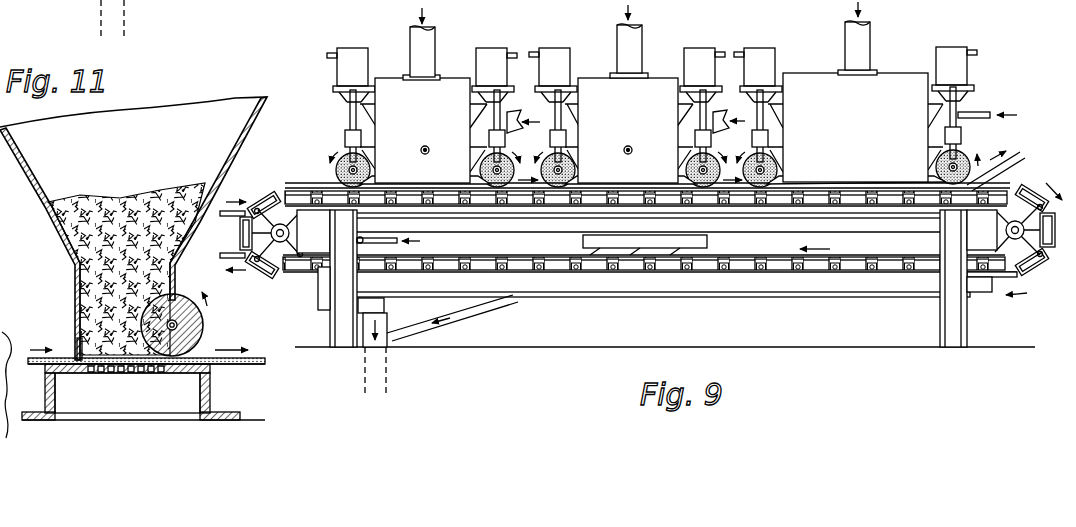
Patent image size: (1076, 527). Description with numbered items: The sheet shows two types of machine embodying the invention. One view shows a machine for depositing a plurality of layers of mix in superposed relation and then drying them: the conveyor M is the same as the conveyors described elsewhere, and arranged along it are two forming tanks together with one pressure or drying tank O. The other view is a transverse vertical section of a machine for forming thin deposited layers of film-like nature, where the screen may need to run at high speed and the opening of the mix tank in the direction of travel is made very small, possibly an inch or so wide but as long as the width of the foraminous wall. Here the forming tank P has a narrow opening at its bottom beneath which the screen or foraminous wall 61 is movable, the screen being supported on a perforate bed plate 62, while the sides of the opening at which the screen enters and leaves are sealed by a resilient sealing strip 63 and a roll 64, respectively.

In FIG. 11, the forming tank P is at (177, 125).
In FIG. 11, the screen or foraminous wall 61 is at (262, 365).
In FIG. 11, the perforate bed plate 62 is at (192, 376).
In FIG. 11, the resilient sealing strip 63 is at (77, 332).
In FIG. 11, the roll 64 is at (203, 320).
In FIG. 9, the conveyor M is at (311, 170).
In FIG. 9, the pressure or drying tank O is at (800, 75).